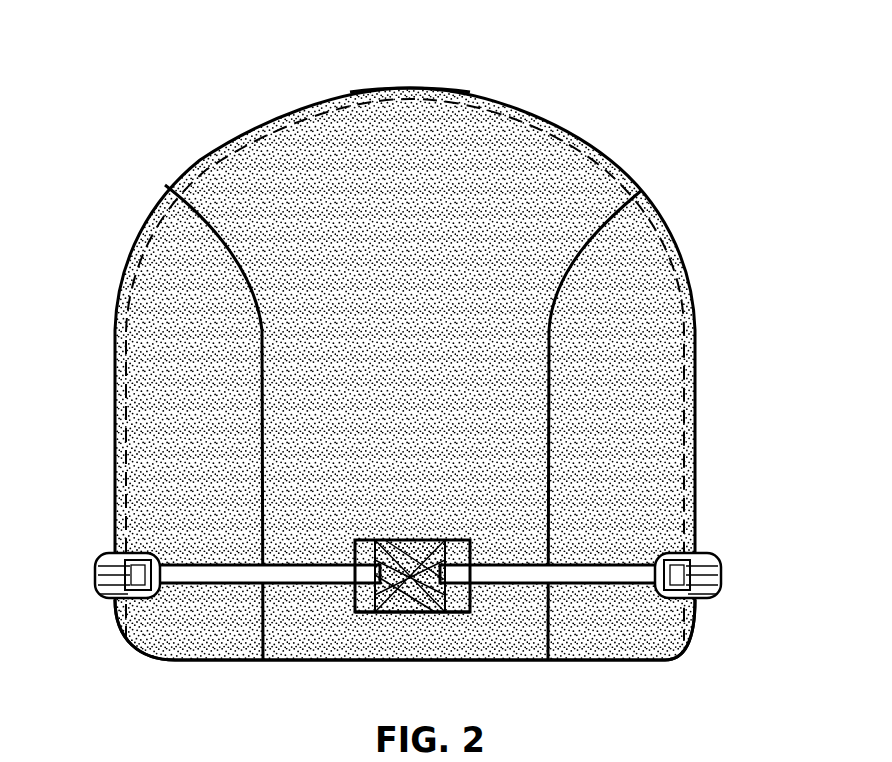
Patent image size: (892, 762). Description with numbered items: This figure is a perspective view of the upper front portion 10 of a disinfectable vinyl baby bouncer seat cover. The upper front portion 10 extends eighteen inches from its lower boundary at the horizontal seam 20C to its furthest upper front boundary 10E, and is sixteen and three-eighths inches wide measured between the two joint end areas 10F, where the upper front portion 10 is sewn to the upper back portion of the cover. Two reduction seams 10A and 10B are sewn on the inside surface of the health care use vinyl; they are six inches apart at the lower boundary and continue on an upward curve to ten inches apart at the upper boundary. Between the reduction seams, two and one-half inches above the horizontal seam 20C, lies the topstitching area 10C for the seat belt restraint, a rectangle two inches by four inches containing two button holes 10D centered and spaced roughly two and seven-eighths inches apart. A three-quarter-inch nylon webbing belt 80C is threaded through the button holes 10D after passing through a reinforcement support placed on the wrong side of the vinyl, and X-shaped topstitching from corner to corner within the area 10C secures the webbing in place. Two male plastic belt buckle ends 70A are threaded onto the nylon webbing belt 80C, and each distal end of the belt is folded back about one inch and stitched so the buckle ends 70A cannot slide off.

The upper front portion 10 is at (552, 242).
The reduction seam 10A is at (257, 360).
The reduction seam 10B is at (552, 382).
The topstitching for seat belt restraint area 10C is at (416, 540).
The button holes 10D is at (410, 612).
The furthest upper front boundary 10E is at (405, 88).
The upper front and upper back joint end areas 10F is at (112, 620).
The horizontal seam 20C is at (425, 660).
The male plastic belt buckle ends 70A is at (96, 562).
The nylon webbing belt 80C is at (216, 563).